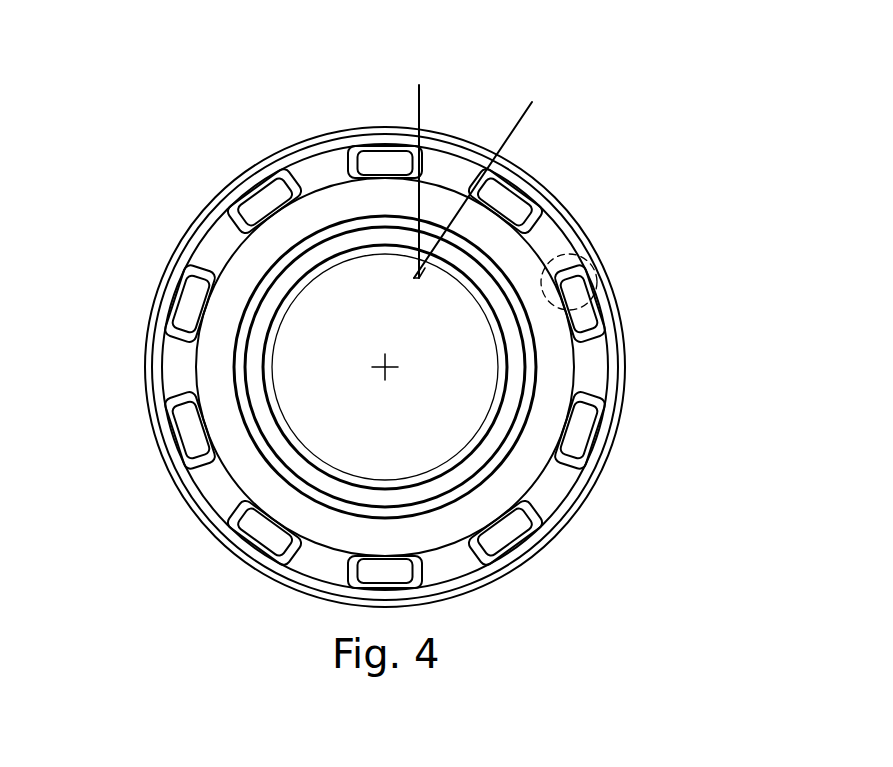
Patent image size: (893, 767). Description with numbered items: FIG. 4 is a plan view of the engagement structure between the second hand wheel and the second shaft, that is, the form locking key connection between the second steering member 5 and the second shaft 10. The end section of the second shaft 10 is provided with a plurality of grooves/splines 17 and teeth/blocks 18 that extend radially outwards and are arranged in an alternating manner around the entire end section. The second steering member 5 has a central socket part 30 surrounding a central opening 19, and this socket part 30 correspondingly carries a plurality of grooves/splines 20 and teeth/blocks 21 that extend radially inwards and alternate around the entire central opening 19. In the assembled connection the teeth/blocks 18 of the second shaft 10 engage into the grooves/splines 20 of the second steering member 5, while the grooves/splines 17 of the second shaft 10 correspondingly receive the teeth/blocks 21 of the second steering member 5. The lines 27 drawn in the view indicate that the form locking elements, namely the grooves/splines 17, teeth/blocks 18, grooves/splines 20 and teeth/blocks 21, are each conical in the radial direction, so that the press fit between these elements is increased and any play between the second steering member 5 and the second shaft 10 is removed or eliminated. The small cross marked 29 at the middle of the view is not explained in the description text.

The second steering member 5 is at (577, 220).
The second shaft 10 is at (432, 272).
The grooves/splines 17 is at (234, 527).
The teeth/blocks 18 is at (227, 243).
The central opening 19 is at (468, 383).
The grooves/splines 20 is at (212, 240).
The teeth/blocks 21 is at (185, 307).
The lines 27 is at (421, 106).
The center axis 29 is at (388, 370).
The central socket part 30 is at (546, 194).